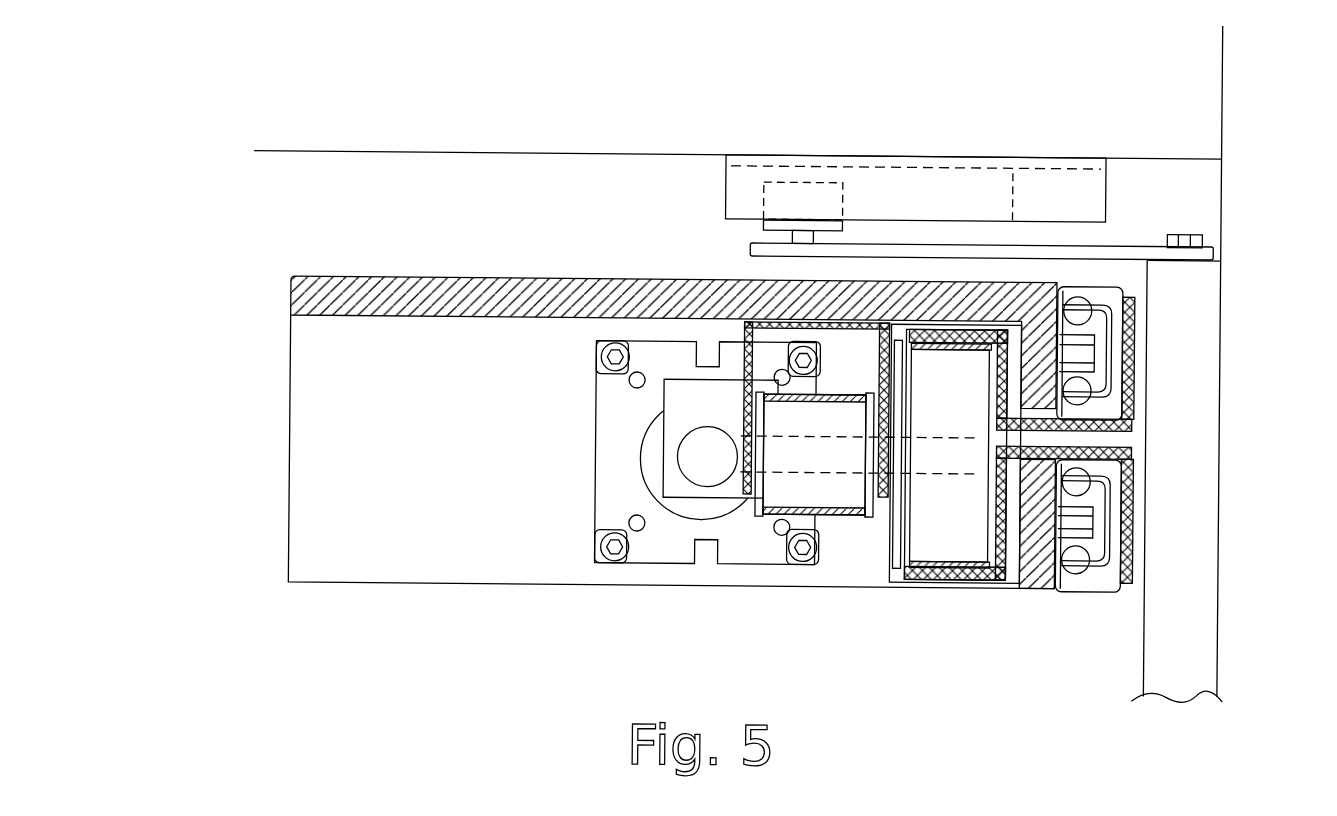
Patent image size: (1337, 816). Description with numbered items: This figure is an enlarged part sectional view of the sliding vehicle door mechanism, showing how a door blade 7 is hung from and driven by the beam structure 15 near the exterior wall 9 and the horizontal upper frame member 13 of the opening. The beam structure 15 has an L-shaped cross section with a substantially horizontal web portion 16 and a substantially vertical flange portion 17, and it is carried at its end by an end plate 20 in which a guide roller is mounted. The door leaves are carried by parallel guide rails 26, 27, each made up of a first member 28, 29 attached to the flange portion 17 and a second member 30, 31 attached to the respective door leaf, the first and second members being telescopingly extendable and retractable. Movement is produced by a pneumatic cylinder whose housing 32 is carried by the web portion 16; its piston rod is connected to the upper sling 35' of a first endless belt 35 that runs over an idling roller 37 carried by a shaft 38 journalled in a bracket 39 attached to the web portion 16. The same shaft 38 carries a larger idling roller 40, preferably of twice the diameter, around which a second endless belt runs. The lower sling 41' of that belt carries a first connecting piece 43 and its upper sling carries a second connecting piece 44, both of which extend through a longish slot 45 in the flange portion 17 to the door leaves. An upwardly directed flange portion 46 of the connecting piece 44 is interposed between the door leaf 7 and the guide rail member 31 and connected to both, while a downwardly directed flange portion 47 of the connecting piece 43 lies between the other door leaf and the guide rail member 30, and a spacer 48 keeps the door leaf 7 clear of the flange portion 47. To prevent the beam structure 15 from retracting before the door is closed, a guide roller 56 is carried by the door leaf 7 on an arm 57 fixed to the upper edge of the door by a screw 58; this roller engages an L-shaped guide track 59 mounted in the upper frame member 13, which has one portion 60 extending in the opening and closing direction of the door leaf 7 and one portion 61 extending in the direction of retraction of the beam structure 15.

The door blade 7 is at (1214, 517).
The exterior wall 9 is at (1221, 102).
The upper frame member 13 is at (512, 155).
The beam structure 15 is at (325, 272).
The web portion 16 is at (430, 277).
The flange portion 17 is at (1026, 584).
The end plate 20 is at (303, 451).
The guide rail 26 is at (1088, 591).
The guide rail 27 is at (1127, 273).
The first member 28 is at (1096, 560).
The first member 29 is at (1094, 328).
The second member 30 is at (1114, 463).
The second member 31 is at (1116, 401).
The cylinder housing 32 is at (596, 430).
The first endless belt 35 is at (816, 425).
The upper sling 35' is at (859, 440).
The idling roller 37 is at (855, 492).
The shaft 38 is at (892, 522).
The bracket 39 is at (880, 328).
The idling roller 40 is at (934, 534).
The lower sling 41' is at (938, 622).
The first connecting piece 43 is at (1026, 576).
The second connecting piece 44 is at (1011, 356).
The slot 45 is at (1046, 434).
The flange portion 46 is at (1133, 306).
The flange portion 47 is at (1134, 540).
The spacer 48 is at (1143, 355).
The guide roller 56 is at (763, 221).
The arm 57 is at (1115, 243).
The screw 58 is at (1202, 232).
The guide track 59 is at (719, 181).
The track portion 60 is at (1056, 178).
The track portion 61 is at (871, 167).